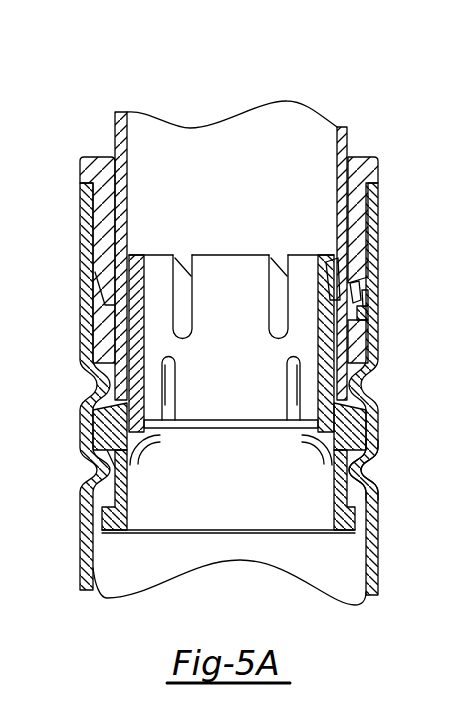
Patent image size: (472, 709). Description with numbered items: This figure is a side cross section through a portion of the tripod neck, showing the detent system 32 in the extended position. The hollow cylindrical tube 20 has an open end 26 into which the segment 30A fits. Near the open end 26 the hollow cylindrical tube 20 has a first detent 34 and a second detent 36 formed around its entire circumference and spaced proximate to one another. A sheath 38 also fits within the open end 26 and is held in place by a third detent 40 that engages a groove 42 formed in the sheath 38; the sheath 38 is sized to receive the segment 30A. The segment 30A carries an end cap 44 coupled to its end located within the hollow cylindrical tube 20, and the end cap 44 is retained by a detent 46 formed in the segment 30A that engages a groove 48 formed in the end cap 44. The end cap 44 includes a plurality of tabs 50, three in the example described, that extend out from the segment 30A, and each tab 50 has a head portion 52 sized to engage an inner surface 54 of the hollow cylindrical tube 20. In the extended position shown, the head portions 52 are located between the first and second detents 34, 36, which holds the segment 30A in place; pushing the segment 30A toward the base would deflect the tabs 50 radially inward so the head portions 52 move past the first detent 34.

The detent system 32 is at (302, 84).
The segment 30A is at (116, 121).
The sheath 38 is at (94, 158).
The open end 26 is at (350, 155).
The hollow cylindrical tube 20 is at (80, 535).
The inner surface 54 is at (96, 575).
The second detent 36 is at (372, 392).
The first detent 34 is at (369, 472).
The head portion 52 is at (362, 428).
The end cap 44 is at (132, 344).
The tab 50 is at (284, 418).
The groove 48 is at (334, 280).
The detent 46 is at (356, 292).
The third detent 40 is at (366, 298).
The groove 42 is at (362, 314).